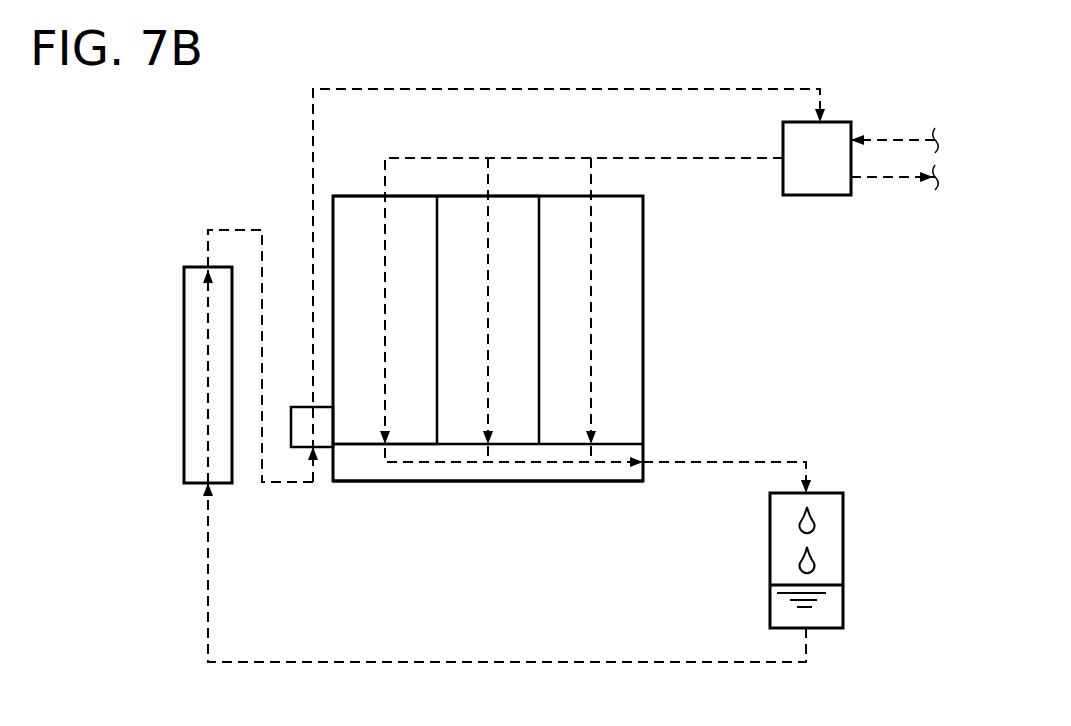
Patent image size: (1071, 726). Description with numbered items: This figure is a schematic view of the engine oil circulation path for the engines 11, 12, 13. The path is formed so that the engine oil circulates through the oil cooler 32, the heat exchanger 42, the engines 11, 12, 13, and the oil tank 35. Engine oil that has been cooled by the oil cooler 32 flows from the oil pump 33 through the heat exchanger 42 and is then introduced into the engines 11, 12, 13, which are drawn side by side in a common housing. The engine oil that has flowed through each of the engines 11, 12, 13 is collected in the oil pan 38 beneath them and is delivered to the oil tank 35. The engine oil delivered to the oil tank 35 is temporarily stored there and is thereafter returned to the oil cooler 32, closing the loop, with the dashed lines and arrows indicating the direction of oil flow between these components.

The engine 11 is at (350, 196).
The engine 12 is at (460, 196).
The engine 13 is at (643, 255).
The oil cooler 32 is at (184, 345).
The oil pump 33 is at (302, 407).
The oil tank 35 is at (845, 523).
The oil pan 38 is at (449, 483).
The heat exchanger 42 is at (812, 197).